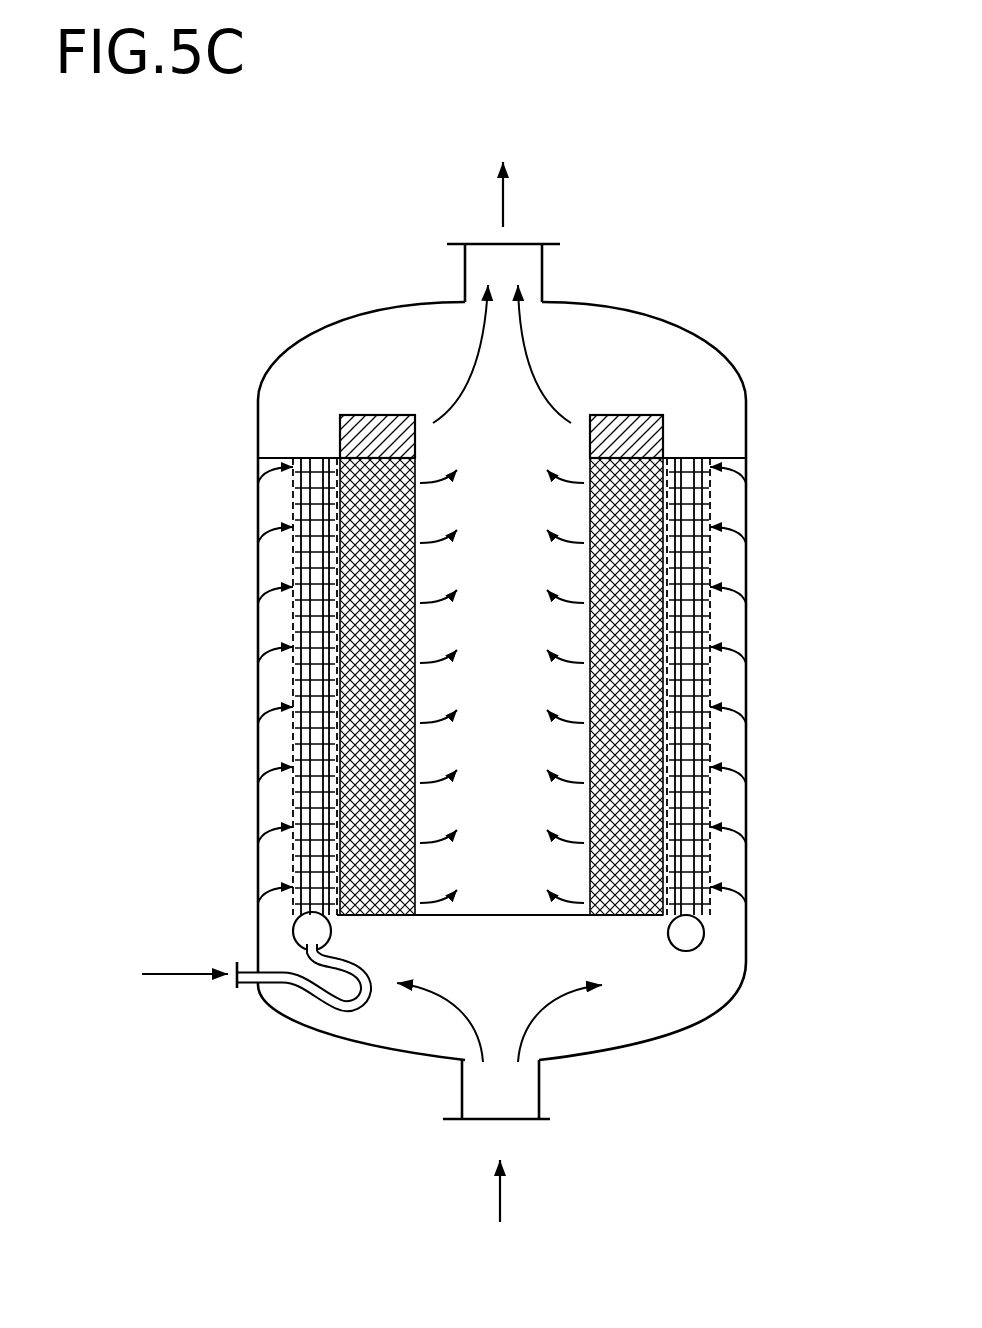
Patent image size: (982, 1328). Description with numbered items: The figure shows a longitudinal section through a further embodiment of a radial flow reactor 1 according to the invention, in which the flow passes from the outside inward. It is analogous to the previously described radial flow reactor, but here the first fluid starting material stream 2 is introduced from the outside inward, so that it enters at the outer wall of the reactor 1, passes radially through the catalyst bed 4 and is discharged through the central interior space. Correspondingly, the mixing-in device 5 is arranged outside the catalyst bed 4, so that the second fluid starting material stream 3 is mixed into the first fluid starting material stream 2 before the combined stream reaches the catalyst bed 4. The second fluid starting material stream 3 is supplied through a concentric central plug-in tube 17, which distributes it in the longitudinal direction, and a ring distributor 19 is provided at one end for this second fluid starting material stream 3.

The reactor 1 is at (767, 418).
The first fluid starting material stream 2 is at (503, 1196).
The second fluid starting material stream 3 is at (158, 976).
The catalyst bed 4 is at (347, 730).
The mixing-in device 5 is at (293, 792).
The plug-in tube 17 is at (253, 975).
The ring distributor 19 is at (293, 478).